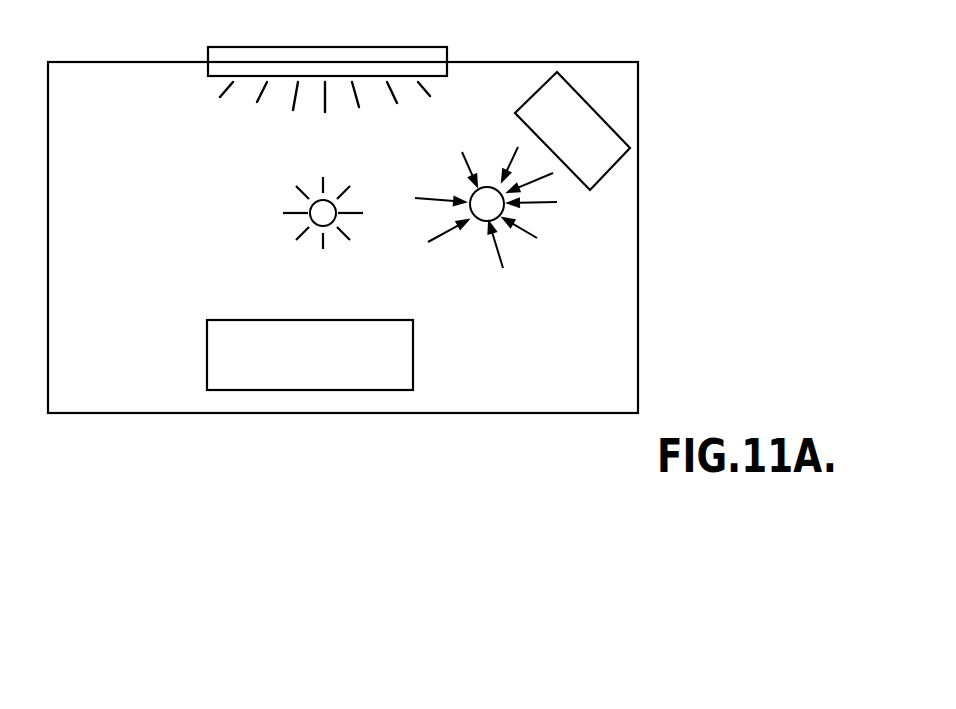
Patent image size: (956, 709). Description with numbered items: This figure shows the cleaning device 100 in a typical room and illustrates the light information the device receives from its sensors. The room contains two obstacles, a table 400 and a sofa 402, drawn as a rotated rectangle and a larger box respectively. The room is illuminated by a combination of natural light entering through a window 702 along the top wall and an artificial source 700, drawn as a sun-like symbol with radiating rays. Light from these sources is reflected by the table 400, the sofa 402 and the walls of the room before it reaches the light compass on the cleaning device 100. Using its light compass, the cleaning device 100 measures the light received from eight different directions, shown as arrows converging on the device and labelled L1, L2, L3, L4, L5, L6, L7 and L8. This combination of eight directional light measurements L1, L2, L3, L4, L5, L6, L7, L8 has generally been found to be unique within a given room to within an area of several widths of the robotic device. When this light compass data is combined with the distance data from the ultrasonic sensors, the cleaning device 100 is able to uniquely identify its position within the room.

The window 702 is at (305, 47).
The artificial source 700 is at (310, 218).
The cleaning device 100 is at (470, 194).
The table 400 is at (590, 148).
The sofa 402 is at (318, 370).
The light measurement L1 is at (528, 239).
The light measurement L2 is at (490, 260).
The light measurement L3 is at (434, 243).
The light measurement L4 is at (426, 198).
The light measurement L5 is at (459, 156).
The light measurement L6 is at (504, 154).
The light measurement L7 is at (545, 218).
The light measurement L8 is at (530, 170).